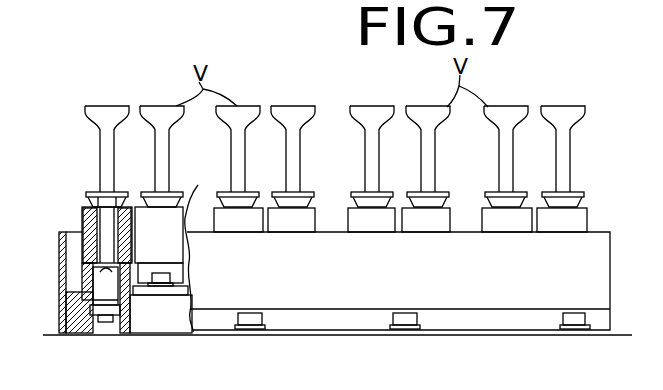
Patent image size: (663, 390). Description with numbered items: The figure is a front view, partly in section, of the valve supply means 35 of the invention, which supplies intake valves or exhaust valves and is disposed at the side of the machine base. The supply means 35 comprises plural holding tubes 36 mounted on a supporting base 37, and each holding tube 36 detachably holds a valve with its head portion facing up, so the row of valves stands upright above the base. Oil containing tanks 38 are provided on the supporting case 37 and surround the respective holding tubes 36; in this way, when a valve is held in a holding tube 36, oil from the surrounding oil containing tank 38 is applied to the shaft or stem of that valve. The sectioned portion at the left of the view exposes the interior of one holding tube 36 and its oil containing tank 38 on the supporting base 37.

The valve supply means 35 is at (187, 362).
The holding tube 36 is at (87, 192).
The supporting base 37 is at (68, 351).
The oil containing tank 38 is at (82, 226).